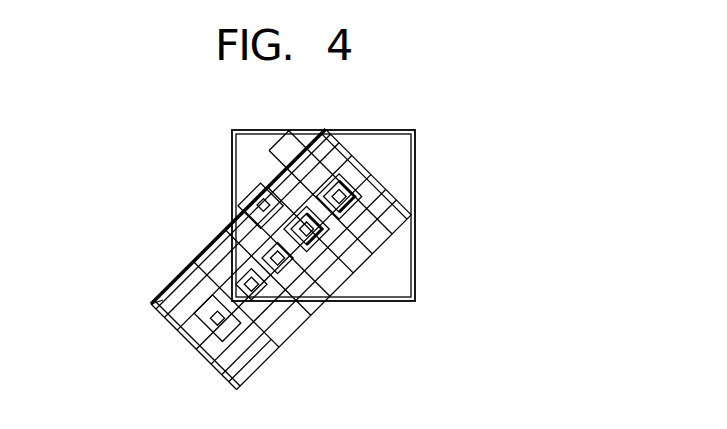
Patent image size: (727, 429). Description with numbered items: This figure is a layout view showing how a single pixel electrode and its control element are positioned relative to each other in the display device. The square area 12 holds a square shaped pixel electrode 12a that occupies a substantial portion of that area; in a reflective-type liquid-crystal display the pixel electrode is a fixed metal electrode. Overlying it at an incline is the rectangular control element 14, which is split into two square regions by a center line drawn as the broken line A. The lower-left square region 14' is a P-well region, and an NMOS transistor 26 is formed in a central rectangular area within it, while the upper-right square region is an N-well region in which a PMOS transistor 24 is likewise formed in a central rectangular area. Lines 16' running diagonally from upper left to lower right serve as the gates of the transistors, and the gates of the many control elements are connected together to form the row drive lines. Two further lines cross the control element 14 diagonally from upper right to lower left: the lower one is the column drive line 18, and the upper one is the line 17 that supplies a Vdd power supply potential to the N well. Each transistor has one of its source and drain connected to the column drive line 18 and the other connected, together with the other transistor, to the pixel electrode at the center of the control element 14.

The square area 12 is at (235, 149).
The pixel electrode 12a is at (246, 182).
The center line A is at (266, 247).
The PMOS transistor 24 is at (357, 180).
The power supply line 17 is at (146, 306).
The control element 14 is at (183, 321).
The NMOS transistor 26 is at (200, 342).
The column drive line 18 is at (226, 366).
The gate lines 16' is at (324, 297).
The lower-left square region 14' is at (306, 356).